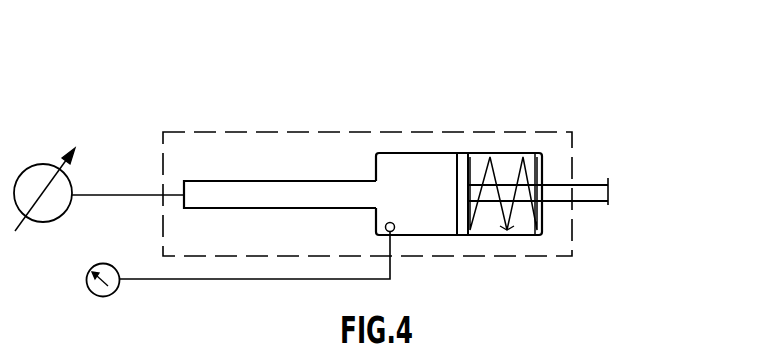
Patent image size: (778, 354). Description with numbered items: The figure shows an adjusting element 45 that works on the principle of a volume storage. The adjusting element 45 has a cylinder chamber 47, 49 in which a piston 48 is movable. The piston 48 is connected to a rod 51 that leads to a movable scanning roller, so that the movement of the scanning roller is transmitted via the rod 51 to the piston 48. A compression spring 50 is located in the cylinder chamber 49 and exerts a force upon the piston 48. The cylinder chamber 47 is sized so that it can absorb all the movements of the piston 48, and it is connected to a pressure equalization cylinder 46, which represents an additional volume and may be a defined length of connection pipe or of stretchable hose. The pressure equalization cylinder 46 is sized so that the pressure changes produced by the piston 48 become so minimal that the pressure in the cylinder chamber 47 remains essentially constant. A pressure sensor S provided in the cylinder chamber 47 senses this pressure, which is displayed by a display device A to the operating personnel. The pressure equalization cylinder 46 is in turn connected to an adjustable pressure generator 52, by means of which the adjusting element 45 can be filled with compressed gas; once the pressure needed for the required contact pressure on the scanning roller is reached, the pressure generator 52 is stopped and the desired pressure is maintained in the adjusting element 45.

The adjusting element 45 is at (195, 132).
The pressure equalization cylinder 46 is at (264, 187).
The cylinder chamber 47 is at (397, 167).
The piston 48 is at (464, 153).
The cylinder chamber 49 is at (508, 162).
The compression spring 50 is at (512, 220).
The rod 51 is at (592, 193).
The adjustable pressure generator 52 is at (43, 222).
The pressure sensor S is at (396, 229).
The display device A is at (115, 292).